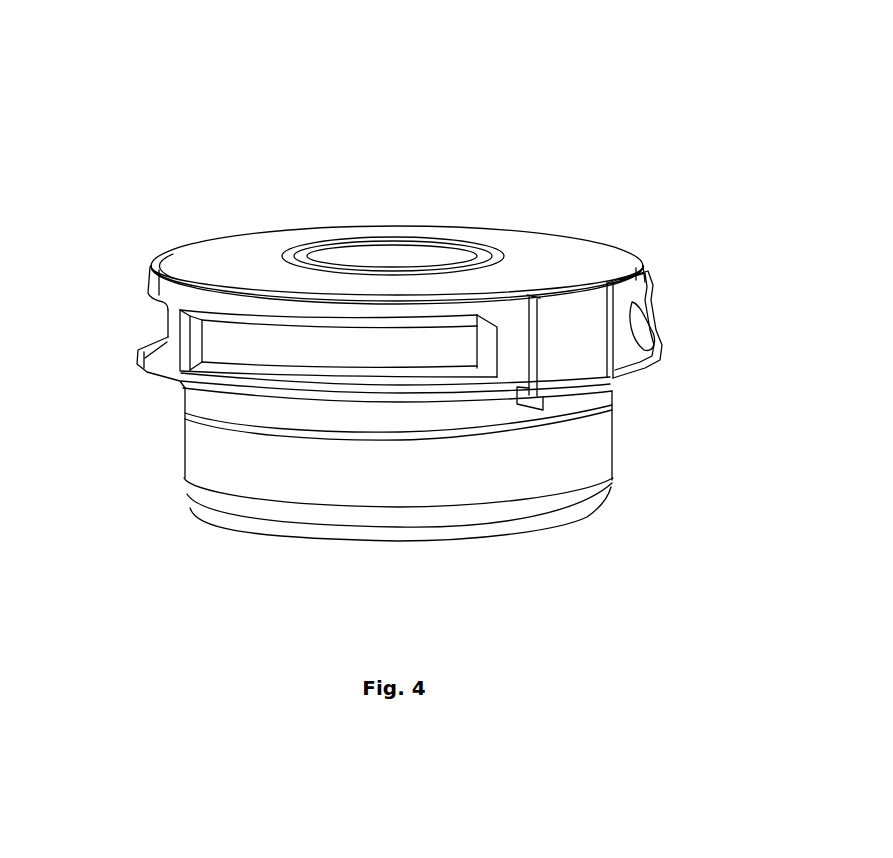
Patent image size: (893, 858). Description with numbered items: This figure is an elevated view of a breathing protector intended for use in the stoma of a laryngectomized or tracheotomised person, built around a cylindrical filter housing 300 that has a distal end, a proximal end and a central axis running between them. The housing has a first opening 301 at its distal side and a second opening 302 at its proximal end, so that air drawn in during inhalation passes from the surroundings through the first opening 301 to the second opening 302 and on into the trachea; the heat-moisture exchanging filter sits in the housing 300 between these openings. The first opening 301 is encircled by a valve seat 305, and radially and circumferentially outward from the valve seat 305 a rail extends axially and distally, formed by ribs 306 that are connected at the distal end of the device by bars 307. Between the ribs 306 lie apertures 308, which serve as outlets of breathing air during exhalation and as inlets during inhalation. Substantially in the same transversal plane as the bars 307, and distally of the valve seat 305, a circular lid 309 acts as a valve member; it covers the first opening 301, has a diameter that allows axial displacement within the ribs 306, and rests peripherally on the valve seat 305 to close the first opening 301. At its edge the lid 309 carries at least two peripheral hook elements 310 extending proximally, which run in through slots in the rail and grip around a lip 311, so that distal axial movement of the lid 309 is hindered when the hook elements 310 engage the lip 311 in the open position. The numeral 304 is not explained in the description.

The cylindrical filter housing 300 is at (318, 482).
The first opening 301 is at (318, 373).
The second opening 302 is at (410, 553).
The window opening 304 is at (445, 355).
The valve seat 305 is at (257, 373).
The ribs 306 is at (147, 278).
The bars 307 is at (640, 270).
The apertures 308 is at (652, 317).
The circular lid 309 is at (386, 255).
The hook elements 310 is at (573, 337).
The lip 311 is at (653, 358).